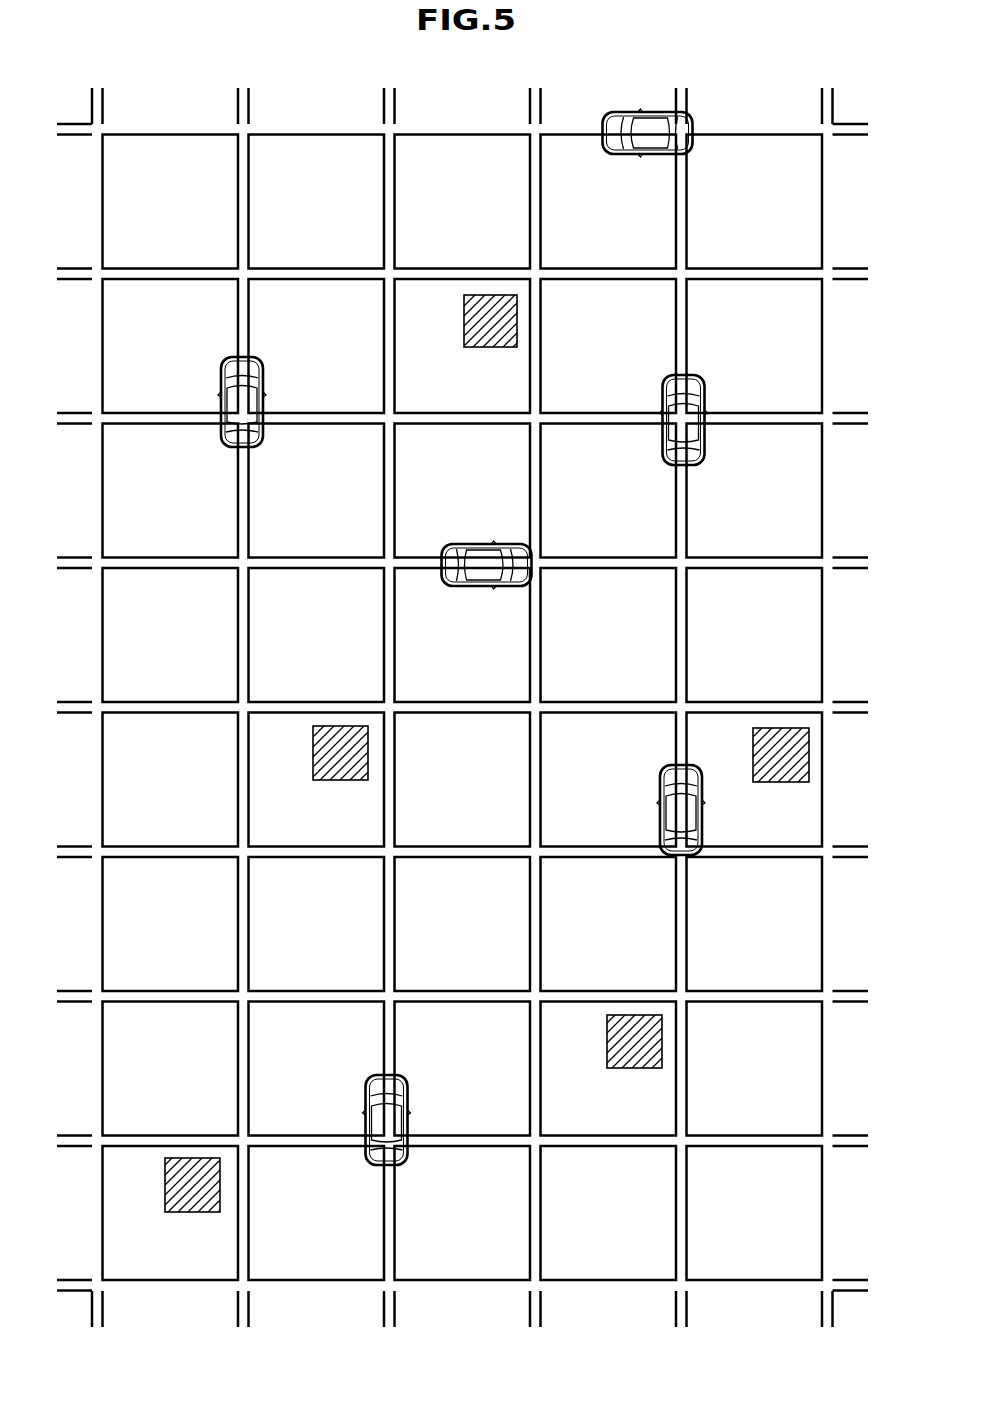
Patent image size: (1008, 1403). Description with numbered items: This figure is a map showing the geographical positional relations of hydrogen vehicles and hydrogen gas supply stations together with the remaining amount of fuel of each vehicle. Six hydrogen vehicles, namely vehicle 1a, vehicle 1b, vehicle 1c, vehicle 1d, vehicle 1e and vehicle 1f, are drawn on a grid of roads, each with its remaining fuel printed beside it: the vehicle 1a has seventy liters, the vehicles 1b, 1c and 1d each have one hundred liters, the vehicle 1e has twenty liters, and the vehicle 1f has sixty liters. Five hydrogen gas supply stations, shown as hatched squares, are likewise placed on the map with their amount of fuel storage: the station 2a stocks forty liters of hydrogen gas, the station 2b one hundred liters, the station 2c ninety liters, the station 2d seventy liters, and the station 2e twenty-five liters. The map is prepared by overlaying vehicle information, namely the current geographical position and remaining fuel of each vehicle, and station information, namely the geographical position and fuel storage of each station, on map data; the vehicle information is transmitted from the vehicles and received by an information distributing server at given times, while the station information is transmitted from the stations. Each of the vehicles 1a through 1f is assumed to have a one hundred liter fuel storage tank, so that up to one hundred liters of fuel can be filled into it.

The vehicle 1a is at (262, 358).
The vehicle 1b is at (642, 113).
The vehicle 1c is at (706, 393).
The vehicle 1d is at (475, 545).
The vehicle 1e is at (660, 770).
The vehicle 1f is at (408, 1085).
The station 2a is at (478, 295).
The station 2b is at (333, 726).
The station 2c is at (635, 1015).
The station 2d is at (190, 1158).
The station 2e is at (778, 728).